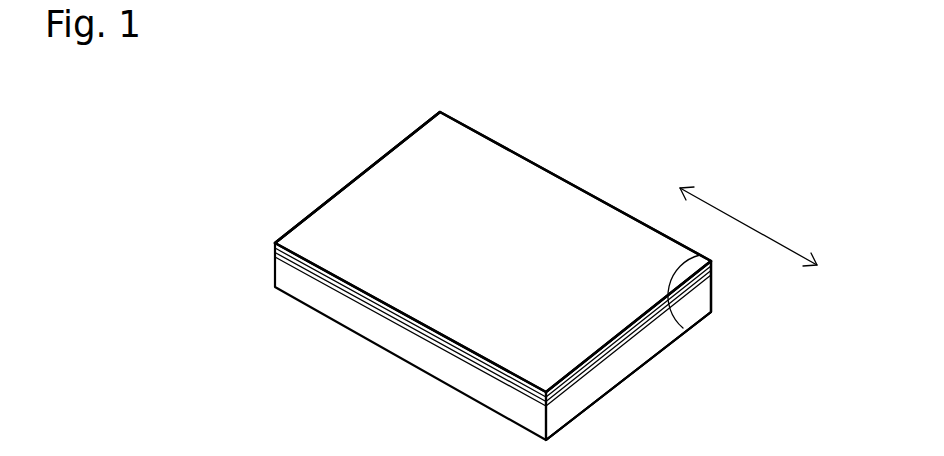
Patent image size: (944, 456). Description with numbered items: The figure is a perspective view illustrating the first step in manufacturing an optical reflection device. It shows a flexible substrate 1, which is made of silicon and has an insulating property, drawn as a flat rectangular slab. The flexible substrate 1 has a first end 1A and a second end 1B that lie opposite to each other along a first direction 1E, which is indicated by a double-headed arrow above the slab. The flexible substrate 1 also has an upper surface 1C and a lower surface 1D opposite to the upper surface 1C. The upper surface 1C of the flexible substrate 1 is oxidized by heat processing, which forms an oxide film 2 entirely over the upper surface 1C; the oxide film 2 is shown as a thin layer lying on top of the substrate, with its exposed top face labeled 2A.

The flexible substrate 1 is at (400, 345).
The first end 1A is at (357, 185).
The second end 1B is at (668, 315).
The upper surface 1C is at (712, 262).
The lower surface 1D is at (595, 402).
The first direction 1E is at (743, 222).
The oxide film 2 is at (543, 198).
The top surface of sheet layer 2A is at (572, 215).